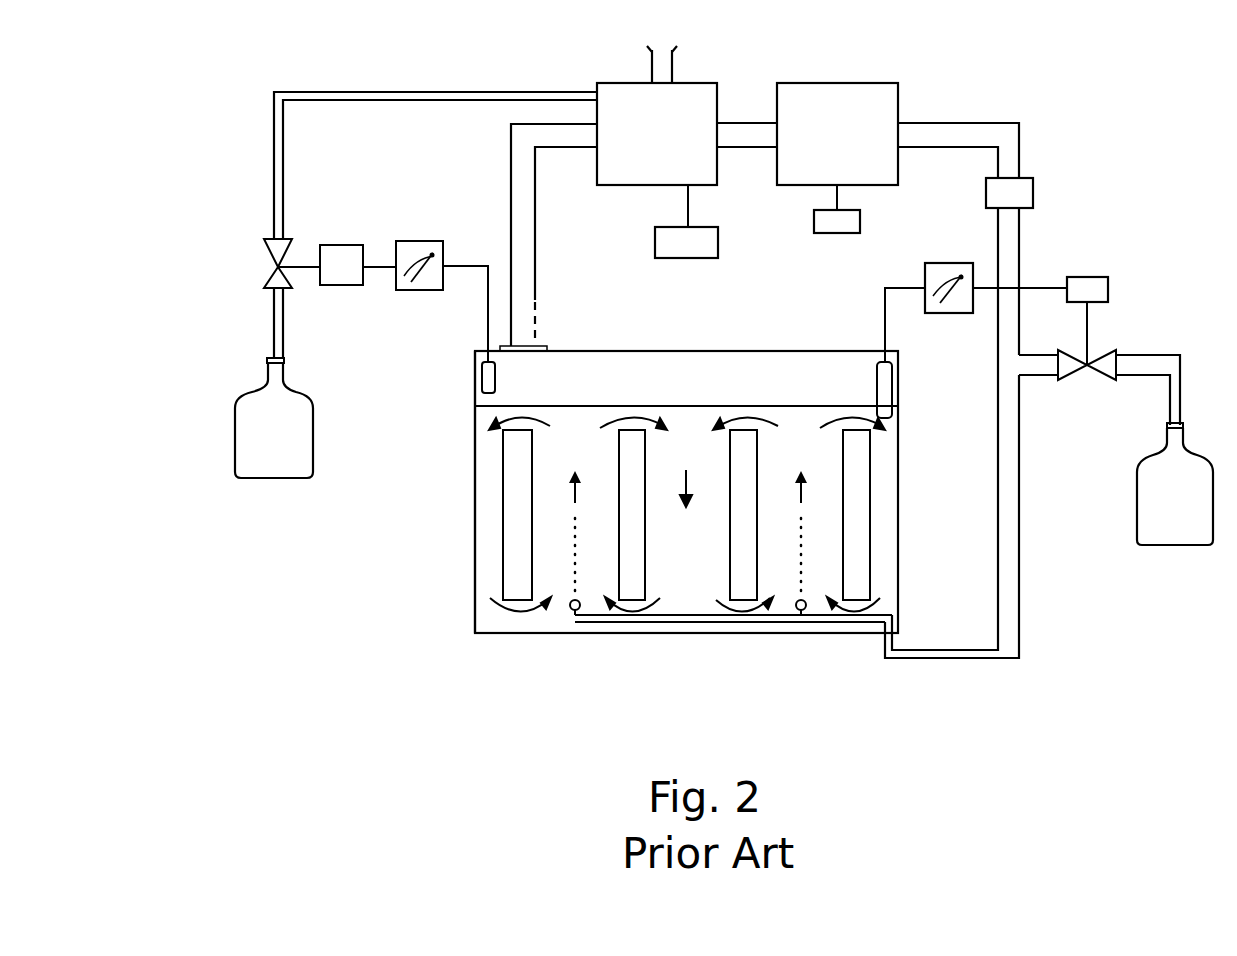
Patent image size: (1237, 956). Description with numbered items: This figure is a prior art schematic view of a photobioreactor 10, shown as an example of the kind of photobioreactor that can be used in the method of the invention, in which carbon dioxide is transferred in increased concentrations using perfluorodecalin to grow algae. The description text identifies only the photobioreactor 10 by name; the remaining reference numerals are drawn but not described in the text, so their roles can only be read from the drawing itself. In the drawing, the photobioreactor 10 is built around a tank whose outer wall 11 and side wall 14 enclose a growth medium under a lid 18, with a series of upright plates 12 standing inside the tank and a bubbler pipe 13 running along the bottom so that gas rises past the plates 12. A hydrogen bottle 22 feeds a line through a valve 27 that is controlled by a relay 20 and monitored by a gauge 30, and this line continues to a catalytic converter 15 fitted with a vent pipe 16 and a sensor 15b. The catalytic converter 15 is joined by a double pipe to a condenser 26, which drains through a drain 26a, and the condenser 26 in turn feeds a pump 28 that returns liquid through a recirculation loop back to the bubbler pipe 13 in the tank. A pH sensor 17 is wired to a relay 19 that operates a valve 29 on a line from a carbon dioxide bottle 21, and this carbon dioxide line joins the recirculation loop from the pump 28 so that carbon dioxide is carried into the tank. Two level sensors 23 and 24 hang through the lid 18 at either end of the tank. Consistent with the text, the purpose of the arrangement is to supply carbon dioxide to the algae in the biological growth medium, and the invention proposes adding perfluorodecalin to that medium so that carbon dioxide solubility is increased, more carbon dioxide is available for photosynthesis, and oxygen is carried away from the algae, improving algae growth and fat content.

The photobioreactor 10 is at (238, 127).
The electrolyte tank 11 is at (899, 463).
The electrode plates 12 is at (870, 500).
The carbon dioxide bubbler pipe 13 is at (577, 624).
The tank wall 14 is at (483, 452).
The catalytic converter 15 is at (597, 92).
The sensor 15b is at (718, 243).
The vent pipe 16 is at (672, 60).
The pH sensor 17 is at (957, 313).
The tank lid 18 is at (792, 350).
The relay 19 is at (1108, 290).
The relay 20 is at (335, 285).
The carbon dioxide bottle 21 is at (1185, 440).
The hydrogen bottle 22 is at (235, 400).
The level sensor 23 is at (480, 380).
The level sensor 24 is at (893, 384).
The condenser 26 is at (897, 83).
The drain 26a is at (860, 221).
The hydrogen valve 27 is at (270, 258).
The pump 28 is at (1033, 192).
The carbon dioxide valve 29 is at (1085, 373).
The gauge 30 is at (420, 290).